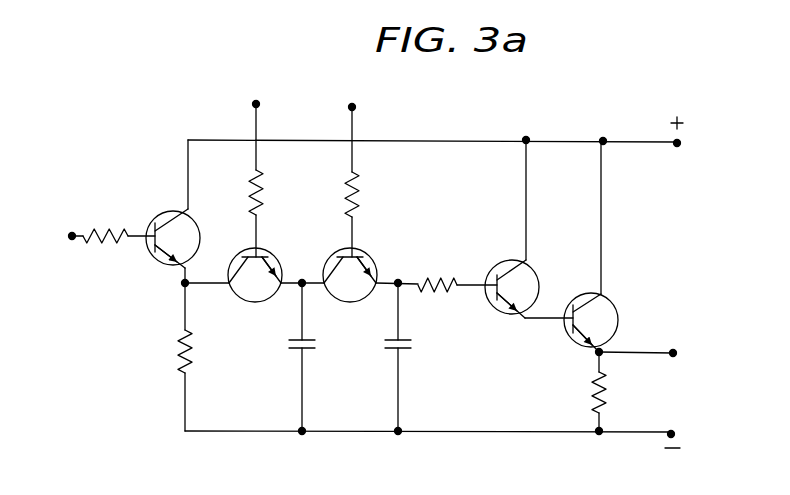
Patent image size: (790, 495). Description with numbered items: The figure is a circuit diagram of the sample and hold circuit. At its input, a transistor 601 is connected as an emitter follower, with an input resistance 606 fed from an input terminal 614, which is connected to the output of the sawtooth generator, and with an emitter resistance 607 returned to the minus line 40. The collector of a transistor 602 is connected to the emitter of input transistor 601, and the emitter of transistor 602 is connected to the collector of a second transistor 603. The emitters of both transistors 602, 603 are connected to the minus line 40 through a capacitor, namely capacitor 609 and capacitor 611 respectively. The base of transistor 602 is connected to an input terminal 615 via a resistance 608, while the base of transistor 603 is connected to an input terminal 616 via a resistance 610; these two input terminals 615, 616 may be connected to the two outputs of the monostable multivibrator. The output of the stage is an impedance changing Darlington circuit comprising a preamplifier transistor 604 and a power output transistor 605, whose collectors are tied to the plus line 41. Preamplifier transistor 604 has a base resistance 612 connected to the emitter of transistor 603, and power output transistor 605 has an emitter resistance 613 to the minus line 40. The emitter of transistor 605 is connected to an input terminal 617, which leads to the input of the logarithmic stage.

The transistor 601 is at (163, 265).
The transistor 602 is at (243, 293).
The second transistor 603 is at (370, 260).
The preamplifier transistor 604 is at (490, 309).
The power output transistor 605 is at (609, 308).
The input resistance 606 is at (123, 227).
The emitter resistance 607 is at (193, 360).
The resistance 608 is at (264, 192).
The capacitor 609 is at (304, 350).
The resistance 610 is at (360, 190).
The capacitor 611 is at (400, 350).
The base resistance 612 is at (450, 277).
The emitter resistance 613 is at (607, 386).
The input terminal 614 is at (72, 240).
The input terminal 615 is at (252, 104).
The input terminal 616 is at (348, 107).
The input terminal 617 is at (675, 349).
The plus line 41 is at (643, 141).
The minus line 40 is at (640, 437).